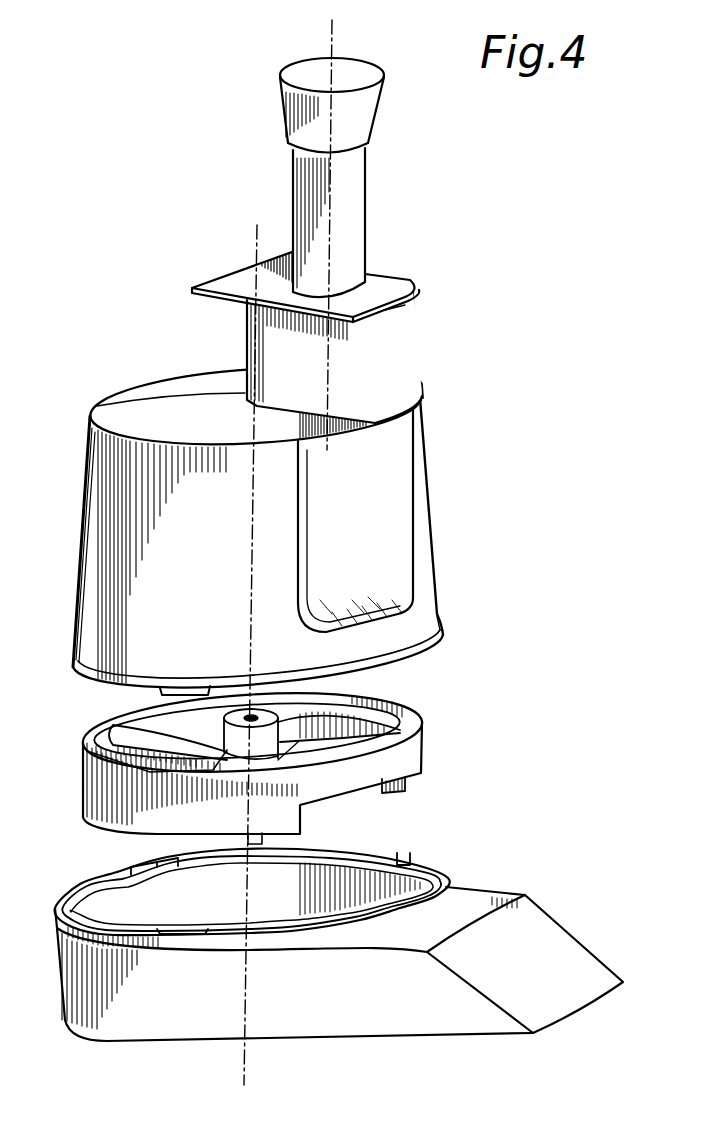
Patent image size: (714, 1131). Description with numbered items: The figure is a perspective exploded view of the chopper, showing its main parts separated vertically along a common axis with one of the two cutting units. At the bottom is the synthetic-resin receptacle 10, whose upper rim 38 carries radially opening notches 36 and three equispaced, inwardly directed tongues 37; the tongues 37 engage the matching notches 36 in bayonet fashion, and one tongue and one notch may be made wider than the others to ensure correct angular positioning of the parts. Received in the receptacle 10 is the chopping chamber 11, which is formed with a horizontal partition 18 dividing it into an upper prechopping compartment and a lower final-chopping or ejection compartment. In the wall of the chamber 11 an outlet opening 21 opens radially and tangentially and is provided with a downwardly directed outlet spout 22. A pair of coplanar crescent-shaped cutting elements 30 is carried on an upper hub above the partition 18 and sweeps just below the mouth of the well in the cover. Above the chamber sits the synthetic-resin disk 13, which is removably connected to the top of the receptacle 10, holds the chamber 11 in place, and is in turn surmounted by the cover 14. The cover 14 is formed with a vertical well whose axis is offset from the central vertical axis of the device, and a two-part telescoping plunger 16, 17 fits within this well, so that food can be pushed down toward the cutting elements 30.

The receptacle 10 is at (85, 973).
The chopping chamber 11 is at (390, 760).
The disk 13 is at (445, 652).
The cover 14 is at (95, 545).
The telescoping plunger part 16 is at (388, 372).
The telescoping plunger part 17 is at (347, 232).
The horizontal partition 18 is at (400, 727).
The outlet opening 21 is at (375, 797).
The outlet spout 22 is at (555, 950).
The cutting elements 30 is at (130, 726).
The notches 36 is at (178, 690).
The tongues 37 is at (172, 933).
The upper rim 38 is at (323, 853).